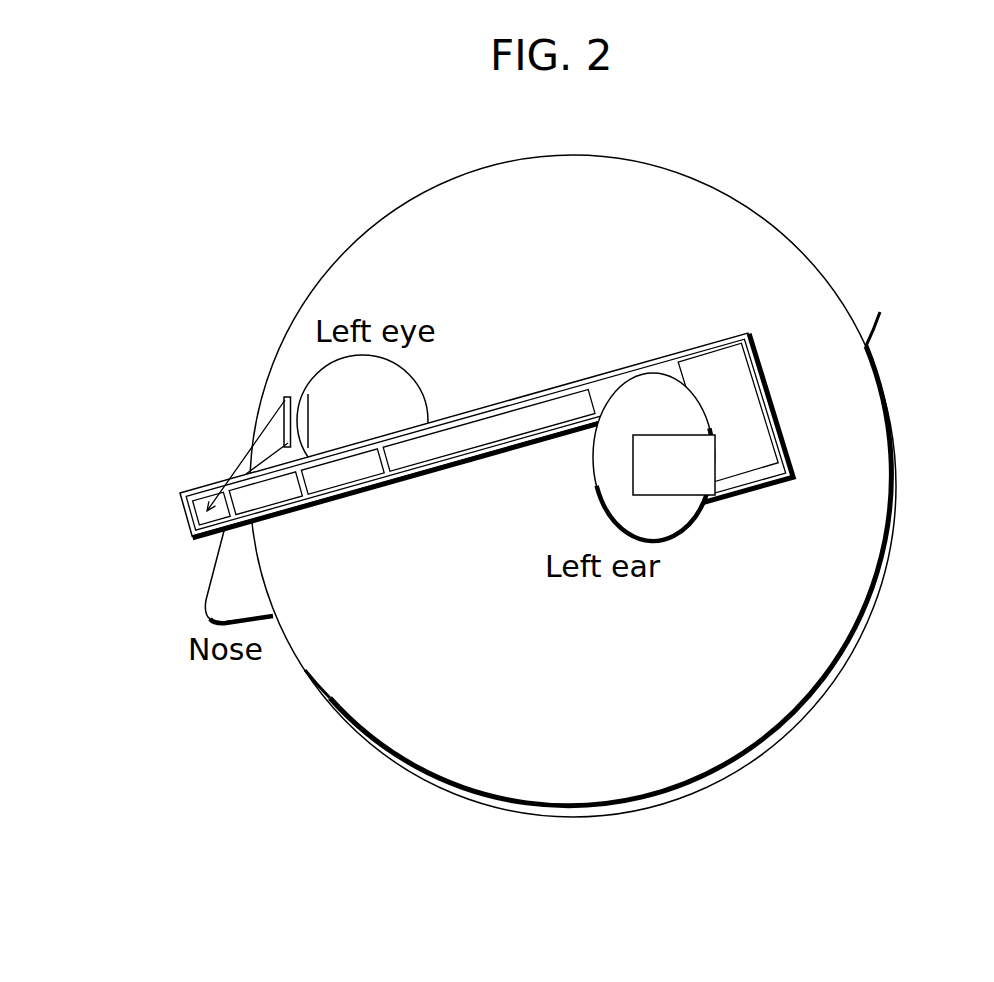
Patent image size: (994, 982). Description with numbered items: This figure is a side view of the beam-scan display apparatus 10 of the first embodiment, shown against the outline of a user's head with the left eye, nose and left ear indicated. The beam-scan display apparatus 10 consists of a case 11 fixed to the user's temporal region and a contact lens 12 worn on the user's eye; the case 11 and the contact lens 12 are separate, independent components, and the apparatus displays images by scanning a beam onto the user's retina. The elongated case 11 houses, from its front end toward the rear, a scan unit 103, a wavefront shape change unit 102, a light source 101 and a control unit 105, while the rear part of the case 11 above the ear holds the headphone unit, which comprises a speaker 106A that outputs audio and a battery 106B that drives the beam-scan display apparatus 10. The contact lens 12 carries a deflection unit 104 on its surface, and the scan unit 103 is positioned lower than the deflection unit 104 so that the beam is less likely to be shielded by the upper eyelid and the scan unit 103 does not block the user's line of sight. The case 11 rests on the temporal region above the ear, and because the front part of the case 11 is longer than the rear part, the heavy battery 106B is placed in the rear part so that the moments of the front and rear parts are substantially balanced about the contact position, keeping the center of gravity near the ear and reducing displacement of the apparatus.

The beam-scan display apparatus 10 is at (103, 525).
The case 11 is at (447, 485).
The contact lens 12 is at (205, 424).
The light source 101 is at (342, 471).
The wavefront shape change unit 102 is at (265, 493).
The scan unit 103 is at (212, 508).
The deflection unit 104 is at (274, 418).
The control unit 105 is at (489, 430).
The speaker 106A is at (677, 482).
The battery 106B is at (728, 412).